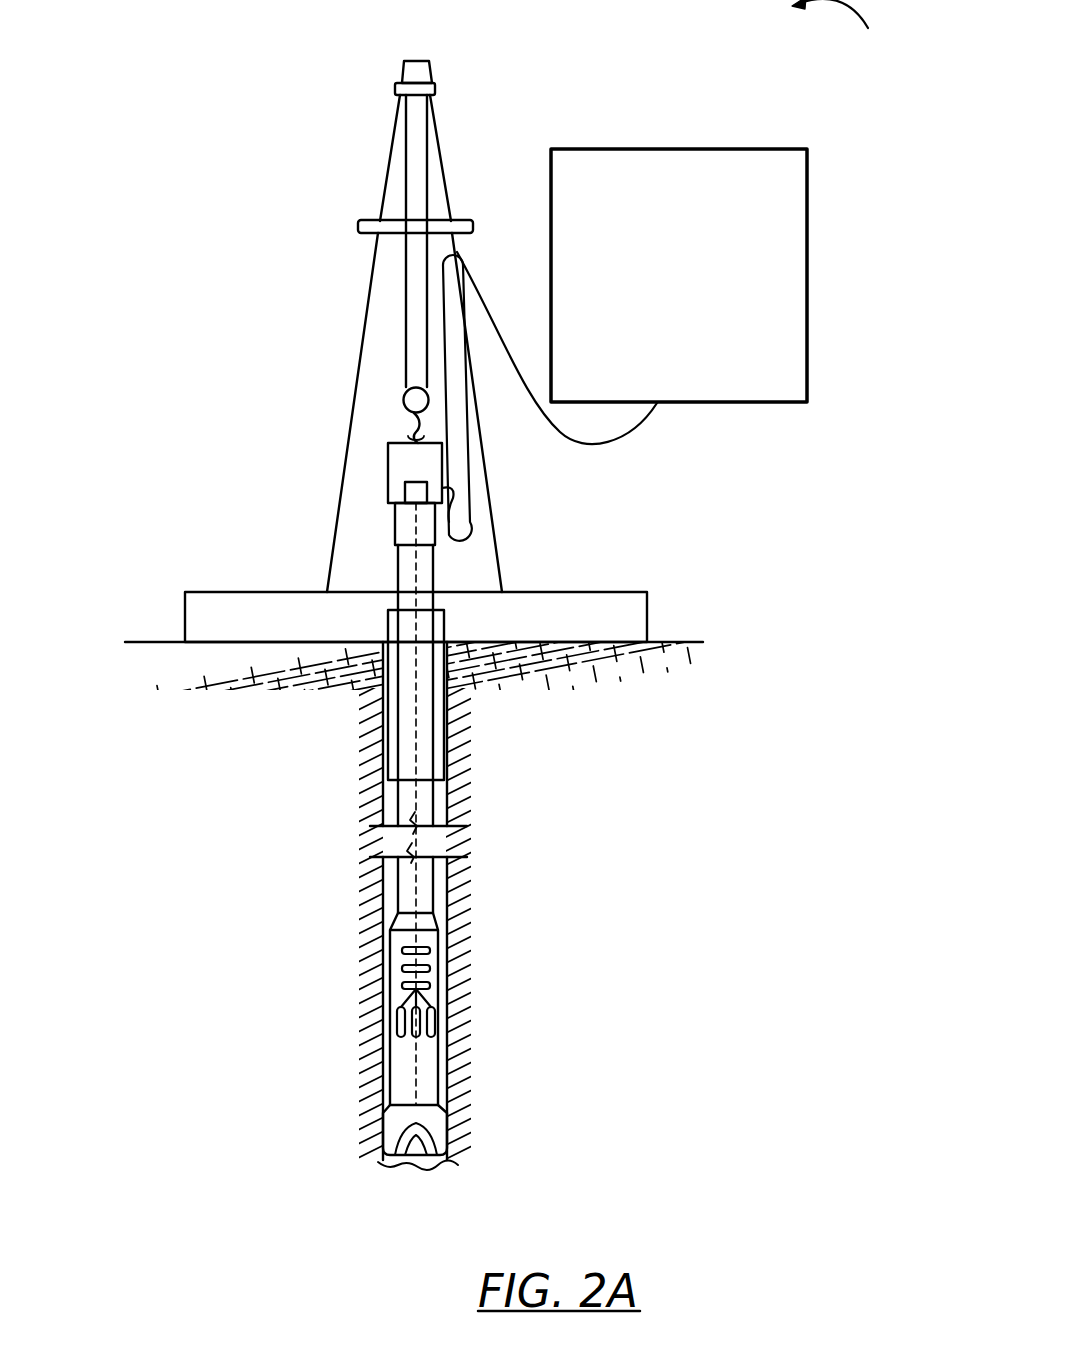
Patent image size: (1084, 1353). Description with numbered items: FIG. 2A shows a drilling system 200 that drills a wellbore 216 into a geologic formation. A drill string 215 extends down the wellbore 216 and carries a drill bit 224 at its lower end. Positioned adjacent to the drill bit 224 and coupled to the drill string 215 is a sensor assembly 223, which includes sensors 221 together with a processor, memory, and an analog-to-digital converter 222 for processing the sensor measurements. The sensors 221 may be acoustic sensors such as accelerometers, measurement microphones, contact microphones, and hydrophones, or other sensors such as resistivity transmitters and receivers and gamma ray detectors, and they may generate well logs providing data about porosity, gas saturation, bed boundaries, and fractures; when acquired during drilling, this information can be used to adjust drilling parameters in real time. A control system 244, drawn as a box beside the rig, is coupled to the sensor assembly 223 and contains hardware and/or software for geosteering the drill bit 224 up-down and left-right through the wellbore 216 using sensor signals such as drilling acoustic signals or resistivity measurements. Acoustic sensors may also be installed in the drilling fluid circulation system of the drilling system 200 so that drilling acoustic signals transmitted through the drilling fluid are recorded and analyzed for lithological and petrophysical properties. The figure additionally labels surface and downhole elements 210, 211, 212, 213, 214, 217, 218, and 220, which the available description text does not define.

The drilling system 200 is at (867, 51).
The drilling rig 210 is at (166, 637).
The top drive / traveling block 211 is at (388, 462).
The derrick / mast 212 is at (337, 515).
The hook 213 is at (405, 398).
The drill string 214 is at (395, 525).
The drill string 215 is at (380, 813).
The wellbore 216 is at (383, 787).
The hose / standpipe 217 is at (467, 460).
The communication link 218 is at (622, 440).
The bottom hole assembly 220 is at (238, 1160).
The sensors 221 is at (397, 1025).
The analog-to-digital converter 222 is at (432, 983).
The sensor assembly 223 is at (390, 945).
The drill bit 224 is at (383, 1140).
The control system 244 is at (697, 238).